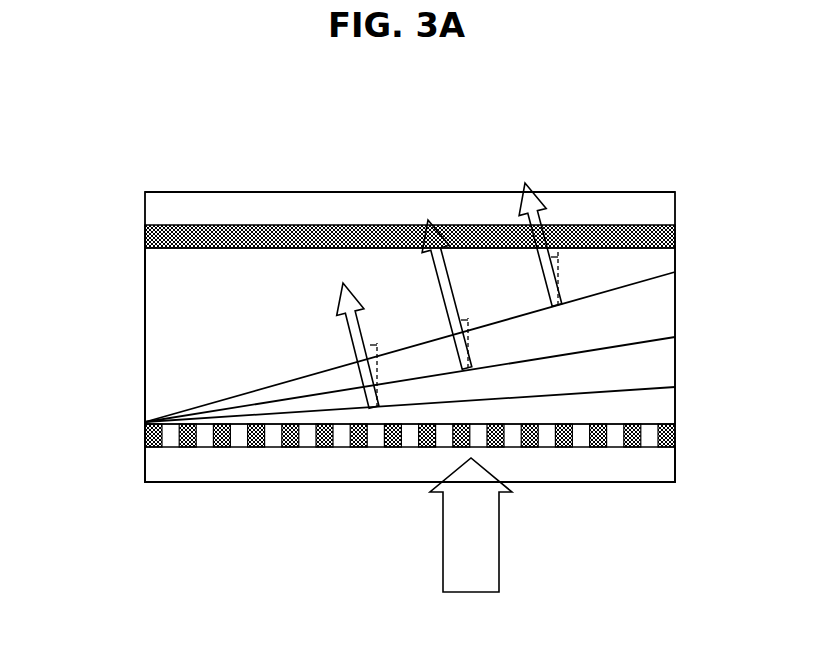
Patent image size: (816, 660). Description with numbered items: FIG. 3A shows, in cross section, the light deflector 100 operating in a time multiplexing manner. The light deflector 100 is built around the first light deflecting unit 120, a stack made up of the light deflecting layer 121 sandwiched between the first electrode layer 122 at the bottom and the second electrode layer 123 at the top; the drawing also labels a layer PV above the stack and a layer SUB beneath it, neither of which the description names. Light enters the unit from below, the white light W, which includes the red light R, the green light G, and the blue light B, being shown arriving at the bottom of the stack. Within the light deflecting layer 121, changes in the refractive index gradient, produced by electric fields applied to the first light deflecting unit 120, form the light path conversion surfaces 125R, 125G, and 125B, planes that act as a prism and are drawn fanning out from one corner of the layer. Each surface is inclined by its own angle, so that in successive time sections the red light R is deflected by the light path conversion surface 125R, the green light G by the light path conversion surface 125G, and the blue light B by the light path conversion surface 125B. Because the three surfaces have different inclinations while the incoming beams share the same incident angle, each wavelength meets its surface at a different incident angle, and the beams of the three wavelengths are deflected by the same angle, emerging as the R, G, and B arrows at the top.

The light deflector 100 is at (672, 153).
The first light deflecting unit 120 is at (72, 237).
The light deflecting layer 121 is at (152, 338).
The first electrode layer 122 is at (152, 437).
The second electrode layer 123 is at (152, 240).
The light path conversion surface 125B is at (640, 281).
The light path conversion surface 125G is at (647, 340).
The light path conversion surface 125R is at (650, 388).
The protective layer PV is at (152, 210).
The substrate SUB is at (152, 466).
The red light R is at (366, 331).
The green light G is at (454, 280).
The blue light B is at (550, 229).
The white light W is at (471, 544).